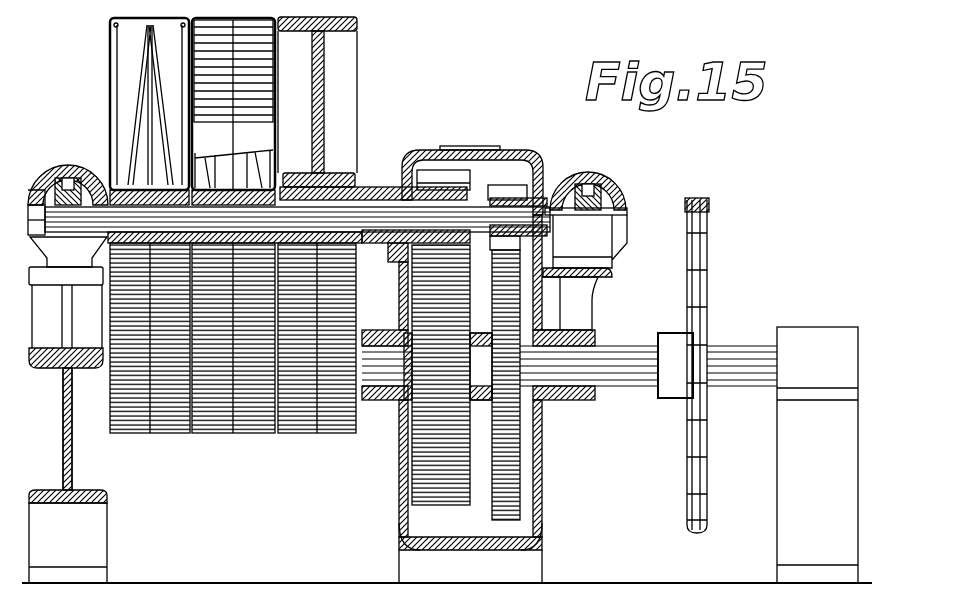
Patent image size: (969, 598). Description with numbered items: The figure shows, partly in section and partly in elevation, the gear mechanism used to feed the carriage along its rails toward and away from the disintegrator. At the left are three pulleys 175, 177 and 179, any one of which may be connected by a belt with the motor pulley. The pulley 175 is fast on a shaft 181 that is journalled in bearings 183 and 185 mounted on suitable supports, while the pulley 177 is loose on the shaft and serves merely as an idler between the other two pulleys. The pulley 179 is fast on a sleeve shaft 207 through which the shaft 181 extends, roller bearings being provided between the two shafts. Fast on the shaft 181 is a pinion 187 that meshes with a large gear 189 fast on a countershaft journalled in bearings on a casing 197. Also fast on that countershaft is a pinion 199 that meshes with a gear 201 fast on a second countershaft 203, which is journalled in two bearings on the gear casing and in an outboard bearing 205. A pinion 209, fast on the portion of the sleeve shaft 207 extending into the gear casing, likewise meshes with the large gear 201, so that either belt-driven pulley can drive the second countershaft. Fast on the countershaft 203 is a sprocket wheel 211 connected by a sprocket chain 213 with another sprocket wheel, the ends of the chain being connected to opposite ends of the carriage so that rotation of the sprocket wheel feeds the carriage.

The pulley 175 is at (162, 437).
The pulley 177 is at (250, 437).
The pulley 179 is at (332, 437).
The shaft 181 is at (91, 218).
The bearing 183 is at (63, 183).
The bearing 185 is at (622, 180).
The pinion 187 is at (512, 190).
The large gear 189 is at (535, 316).
The casing 197 is at (537, 430).
The pinion 199 is at (480, 392).
The gear 201 is at (418, 483).
The second countershaft 203 is at (626, 380).
The outboard bearing 205 is at (818, 333).
The sleeve shaft 207 is at (368, 193).
The pinion 209 is at (438, 177).
The sprocket wheel 211 is at (687, 488).
The sprocket chain 213 is at (703, 197).